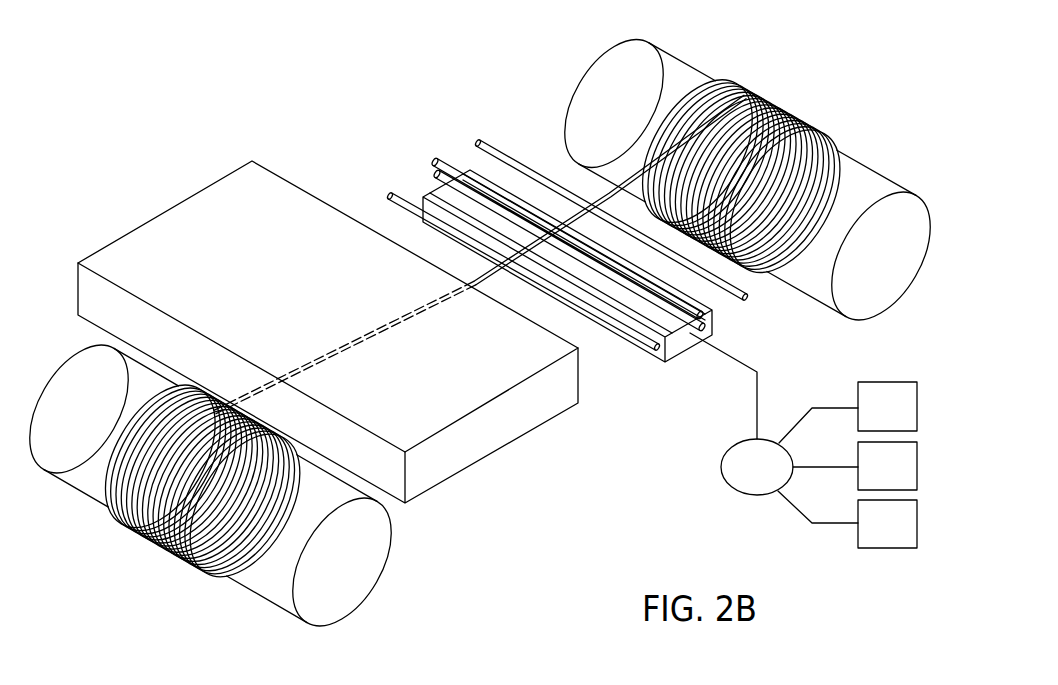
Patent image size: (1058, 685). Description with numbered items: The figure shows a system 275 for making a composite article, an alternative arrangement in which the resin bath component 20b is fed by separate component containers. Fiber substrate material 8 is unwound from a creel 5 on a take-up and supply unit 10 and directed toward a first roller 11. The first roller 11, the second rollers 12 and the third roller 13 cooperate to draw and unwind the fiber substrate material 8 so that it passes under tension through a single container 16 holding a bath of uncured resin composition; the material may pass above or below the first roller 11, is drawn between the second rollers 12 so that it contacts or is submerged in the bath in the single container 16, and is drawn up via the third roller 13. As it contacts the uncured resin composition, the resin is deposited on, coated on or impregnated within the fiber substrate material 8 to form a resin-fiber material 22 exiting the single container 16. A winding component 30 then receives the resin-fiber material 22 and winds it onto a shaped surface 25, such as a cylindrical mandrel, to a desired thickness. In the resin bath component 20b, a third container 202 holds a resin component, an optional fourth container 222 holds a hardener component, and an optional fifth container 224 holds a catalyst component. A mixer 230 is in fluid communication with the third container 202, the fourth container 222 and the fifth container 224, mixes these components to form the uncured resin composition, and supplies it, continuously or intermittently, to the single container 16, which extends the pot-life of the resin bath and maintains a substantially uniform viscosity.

The creel 5 is at (892, 278).
The fiber substrate material 8 is at (745, 92).
The take-up spool 10 is at (747, 186).
The first roller 11 is at (748, 297).
The second rollers 12 is at (708, 328).
The third roller 13 is at (398, 194).
The single container 16 is at (668, 350).
The resin-fiber material 22 is at (478, 282).
The shaped surface 25 is at (280, 583).
The winding component 30 is at (239, 492).
The system 275 is at (203, 151).
The resin bath component 20b is at (616, 496).
The mixer 230 is at (741, 414).
The third container 202 is at (848, 412).
The fourth container 222 is at (855, 466).
The fifth container 224 is at (847, 519).